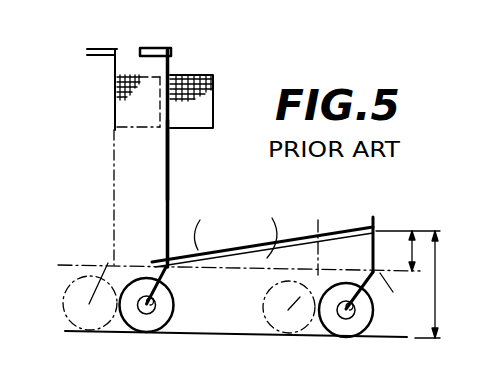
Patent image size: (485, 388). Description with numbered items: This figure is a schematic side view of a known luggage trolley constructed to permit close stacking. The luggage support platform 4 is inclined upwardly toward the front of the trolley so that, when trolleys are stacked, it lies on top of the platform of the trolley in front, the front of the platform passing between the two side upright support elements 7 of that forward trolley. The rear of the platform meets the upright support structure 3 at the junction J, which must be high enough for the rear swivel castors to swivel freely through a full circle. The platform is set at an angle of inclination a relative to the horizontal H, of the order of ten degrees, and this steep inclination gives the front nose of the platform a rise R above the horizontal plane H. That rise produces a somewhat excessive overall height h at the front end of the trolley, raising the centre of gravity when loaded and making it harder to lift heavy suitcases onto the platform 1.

The wheels / undercarriage 1 is at (157, 262).
The upright support structure 3 is at (160, 168).
The luggage support platform 4 is at (262, 237).
The side upright support element 7 is at (168, 153).
The angle of inclination a is at (258, 240).
The rise of the front nose of the platform R is at (408, 251).
The overall height of the front end of the trolley h is at (442, 284).
The horizontal plane H is at (393, 301).